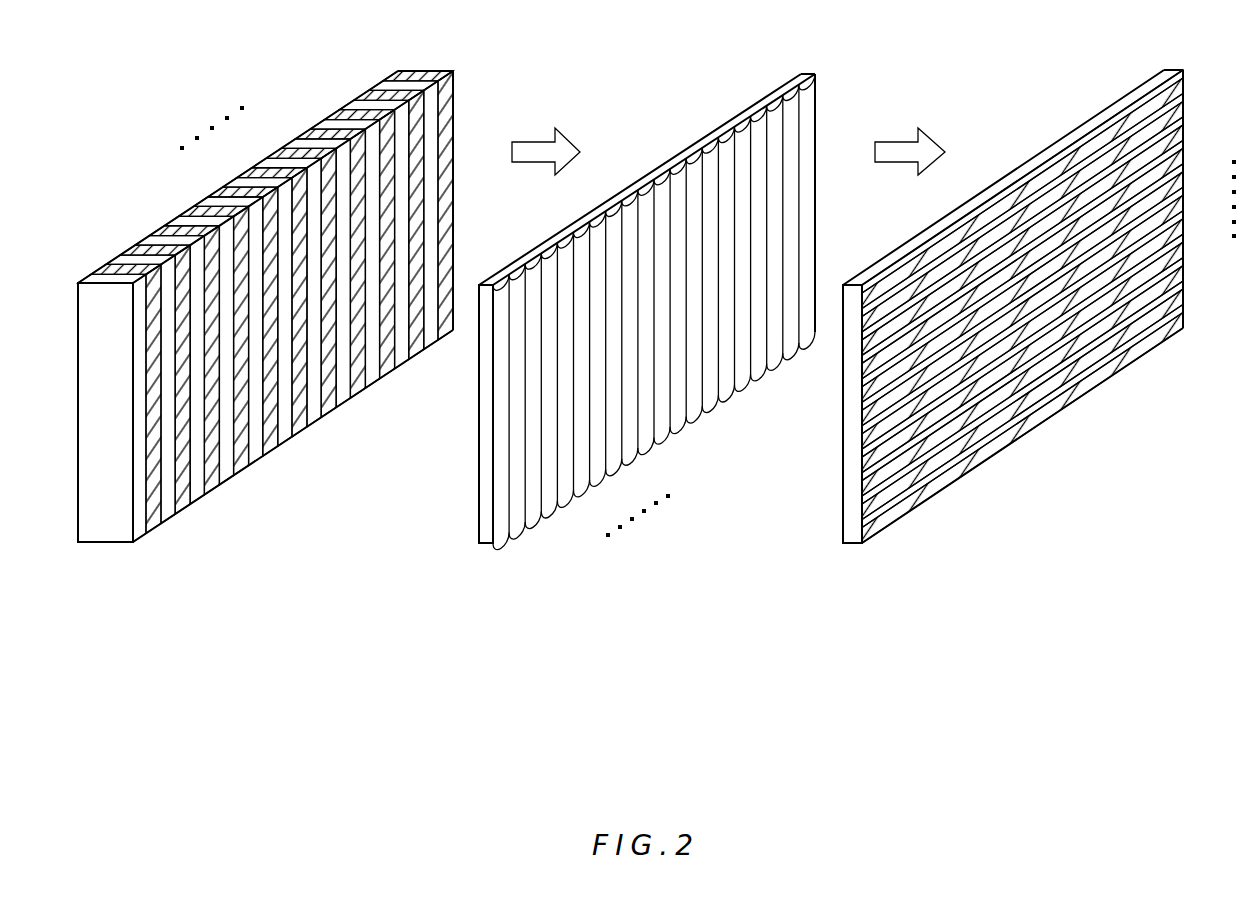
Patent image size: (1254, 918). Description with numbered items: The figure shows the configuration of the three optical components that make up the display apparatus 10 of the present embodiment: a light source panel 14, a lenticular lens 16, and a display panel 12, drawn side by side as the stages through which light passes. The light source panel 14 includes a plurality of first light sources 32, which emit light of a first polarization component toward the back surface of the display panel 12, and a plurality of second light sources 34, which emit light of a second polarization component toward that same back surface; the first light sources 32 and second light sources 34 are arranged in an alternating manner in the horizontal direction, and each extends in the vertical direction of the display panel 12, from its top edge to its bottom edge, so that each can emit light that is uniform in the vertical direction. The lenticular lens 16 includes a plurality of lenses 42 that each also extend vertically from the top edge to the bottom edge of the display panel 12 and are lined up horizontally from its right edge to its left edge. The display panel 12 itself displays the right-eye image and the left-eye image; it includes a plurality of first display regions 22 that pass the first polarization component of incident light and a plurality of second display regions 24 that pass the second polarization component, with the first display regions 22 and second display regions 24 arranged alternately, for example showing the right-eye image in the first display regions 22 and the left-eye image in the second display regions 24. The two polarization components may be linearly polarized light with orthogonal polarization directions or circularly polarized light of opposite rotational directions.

The display apparatus 10 is at (642, 374).
The display panel 12 is at (1047, 285).
The light source panel 14 is at (248, 275).
The lenticular lens 16 is at (643, 331).
The first display regions 22 is at (1184, 92).
The second display regions 24 is at (1184, 77).
The first light sources 32 is at (384, 81).
The second light sources 34 is at (400, 72).
The lenses 42 is at (505, 550).